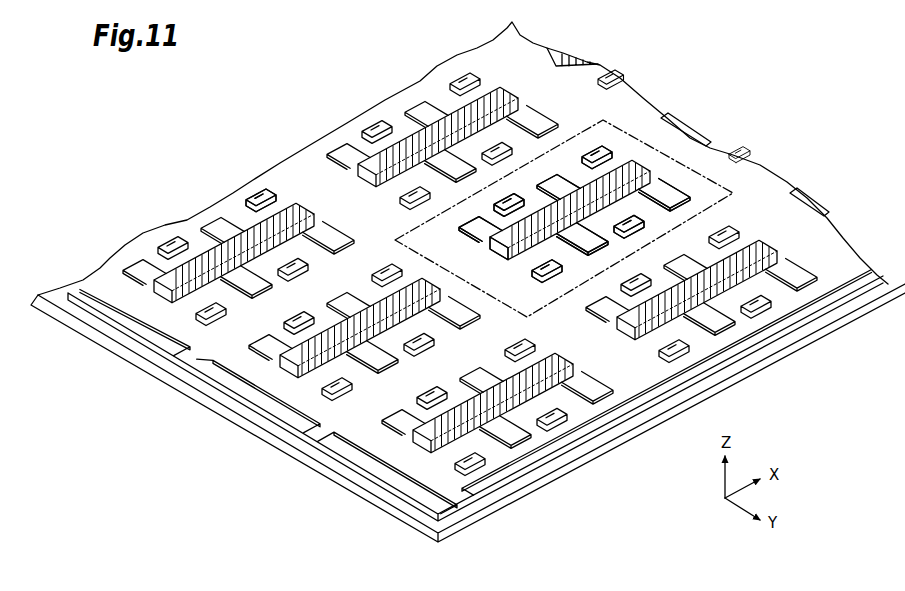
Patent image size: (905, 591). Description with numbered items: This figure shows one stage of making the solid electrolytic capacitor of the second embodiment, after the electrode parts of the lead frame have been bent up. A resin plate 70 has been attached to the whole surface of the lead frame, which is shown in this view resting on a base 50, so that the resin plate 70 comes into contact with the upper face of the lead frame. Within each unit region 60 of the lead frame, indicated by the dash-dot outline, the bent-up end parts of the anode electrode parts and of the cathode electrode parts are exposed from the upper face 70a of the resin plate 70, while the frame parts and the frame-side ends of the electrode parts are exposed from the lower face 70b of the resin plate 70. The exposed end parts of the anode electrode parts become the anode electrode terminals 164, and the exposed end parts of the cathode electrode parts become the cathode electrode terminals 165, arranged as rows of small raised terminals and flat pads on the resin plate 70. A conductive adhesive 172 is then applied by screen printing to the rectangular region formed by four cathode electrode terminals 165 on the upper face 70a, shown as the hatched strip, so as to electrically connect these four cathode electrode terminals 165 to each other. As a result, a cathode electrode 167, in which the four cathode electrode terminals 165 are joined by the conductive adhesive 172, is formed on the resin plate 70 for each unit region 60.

The base substrate 50 is at (57, 288).
The resin plate 70 is at (110, 258).
The upper face of the resin plate 70a is at (305, 172).
The lower face of the resin plate 70b is at (268, 190).
The unit region 60 is at (667, 155).
The anode electrode terminal 164 is at (593, 150).
The cathode electrode terminal 165 is at (560, 176).
The cathode electrode 167 is at (487, 216).
The conductive adhesive 172 is at (492, 252).